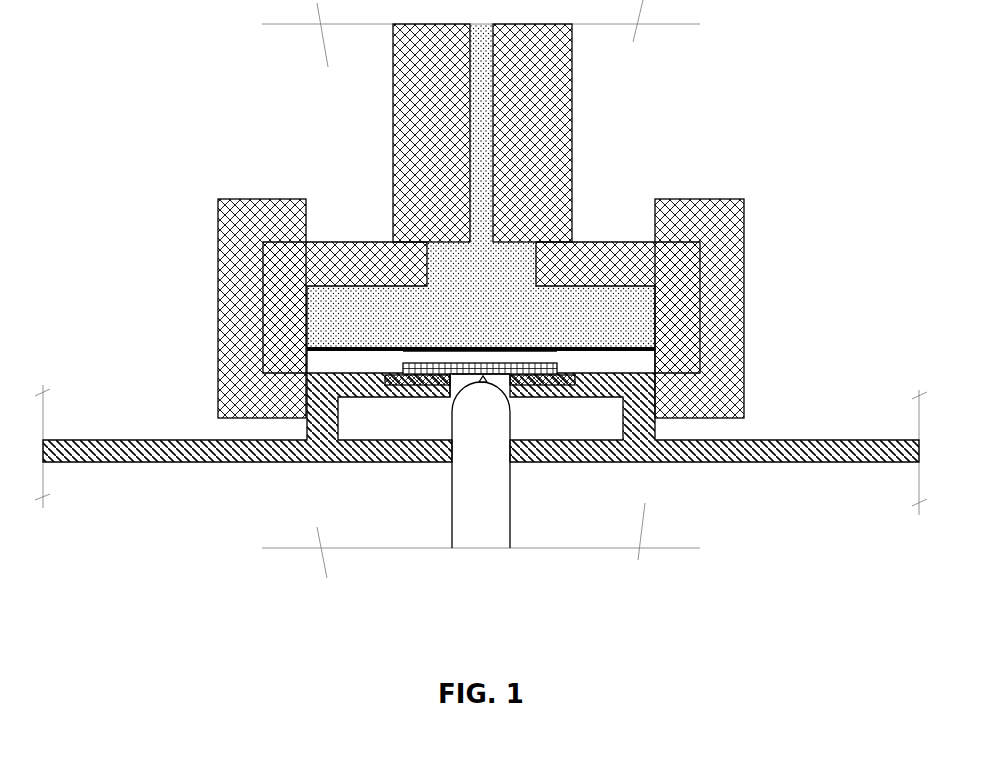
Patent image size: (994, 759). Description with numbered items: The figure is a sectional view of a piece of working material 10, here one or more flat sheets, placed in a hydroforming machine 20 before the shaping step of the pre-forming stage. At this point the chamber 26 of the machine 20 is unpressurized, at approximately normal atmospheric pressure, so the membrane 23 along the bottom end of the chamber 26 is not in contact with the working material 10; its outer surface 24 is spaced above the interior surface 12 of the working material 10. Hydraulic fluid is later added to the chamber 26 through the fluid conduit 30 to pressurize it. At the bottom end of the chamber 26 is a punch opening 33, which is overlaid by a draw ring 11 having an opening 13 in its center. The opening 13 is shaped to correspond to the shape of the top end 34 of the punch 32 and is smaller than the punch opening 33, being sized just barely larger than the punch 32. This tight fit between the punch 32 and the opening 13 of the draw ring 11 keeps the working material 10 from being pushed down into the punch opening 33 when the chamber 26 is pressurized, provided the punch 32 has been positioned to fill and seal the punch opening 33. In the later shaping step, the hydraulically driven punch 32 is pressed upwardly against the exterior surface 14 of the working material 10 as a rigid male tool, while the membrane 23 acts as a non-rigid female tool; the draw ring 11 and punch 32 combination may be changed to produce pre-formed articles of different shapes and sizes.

The working material 10 is at (478, 363).
The draw ring 11 is at (413, 386).
The interior surface 12 is at (515, 349).
The opening 13 is at (455, 373).
The exterior surface 14 is at (499, 385).
The hydroforming machine 20 is at (591, 162).
The membrane 23 is at (359, 347).
The outer surface 24 is at (333, 362).
The chamber 26 is at (305, 320).
The fluid conduit 30 is at (470, 104).
The punch 32 is at (452, 490).
The punch opening 33 is at (451, 396).
The top end 34 is at (484, 384).